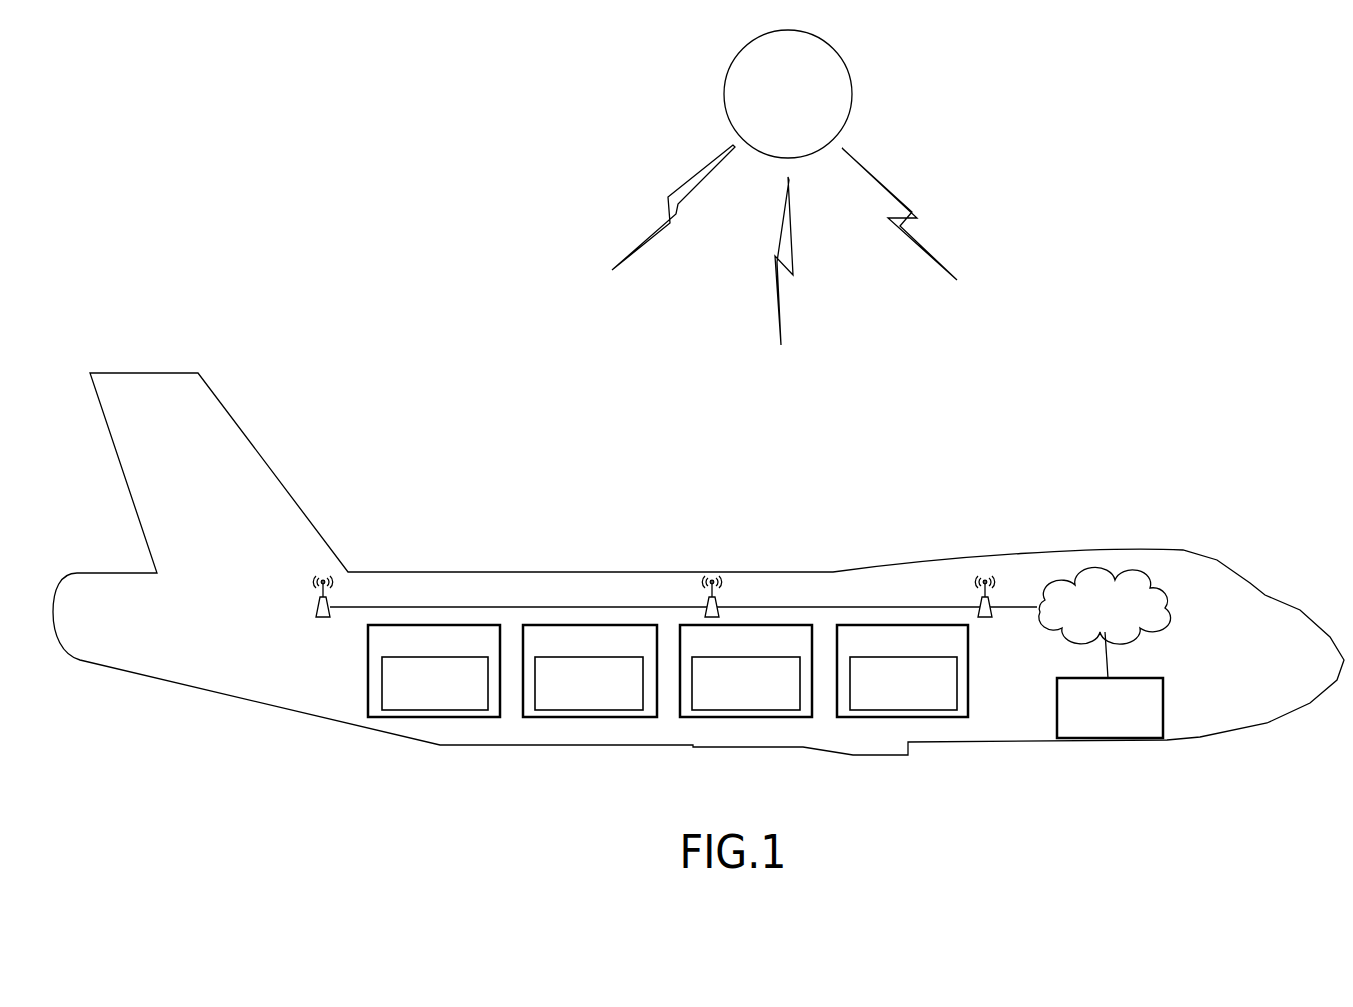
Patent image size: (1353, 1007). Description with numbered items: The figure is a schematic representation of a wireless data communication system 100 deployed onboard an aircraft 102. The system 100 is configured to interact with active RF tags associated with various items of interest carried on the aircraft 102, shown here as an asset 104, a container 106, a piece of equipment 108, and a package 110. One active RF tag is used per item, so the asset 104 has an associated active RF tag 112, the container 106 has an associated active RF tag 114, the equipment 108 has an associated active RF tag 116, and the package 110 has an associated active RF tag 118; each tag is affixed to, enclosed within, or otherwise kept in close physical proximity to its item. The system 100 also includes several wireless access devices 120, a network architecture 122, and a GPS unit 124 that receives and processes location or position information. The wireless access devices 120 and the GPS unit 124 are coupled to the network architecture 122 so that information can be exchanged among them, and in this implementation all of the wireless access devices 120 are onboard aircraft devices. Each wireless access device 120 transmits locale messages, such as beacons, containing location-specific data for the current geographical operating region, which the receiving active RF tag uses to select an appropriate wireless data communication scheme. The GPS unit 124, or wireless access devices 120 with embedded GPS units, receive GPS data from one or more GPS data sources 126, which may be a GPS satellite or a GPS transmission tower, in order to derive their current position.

The wireless data communication system 100 is at (312, 645).
The aircraft 102 is at (1115, 551).
The asset 104 is at (443, 684).
The container 106 is at (598, 684).
The piece of equipment 108 is at (759, 685).
The package 110 is at (937, 671).
The active RF tag 112 is at (453, 710).
The active RF tag 114 is at (607, 712).
The active RF tag 116 is at (775, 710).
The active RF tag 118 is at (958, 680).
The wireless access device 120 is at (318, 600).
The network architecture 122 is at (1147, 581).
The GPS unit 124 is at (1165, 712).
The GPS data source 126 is at (851, 87).